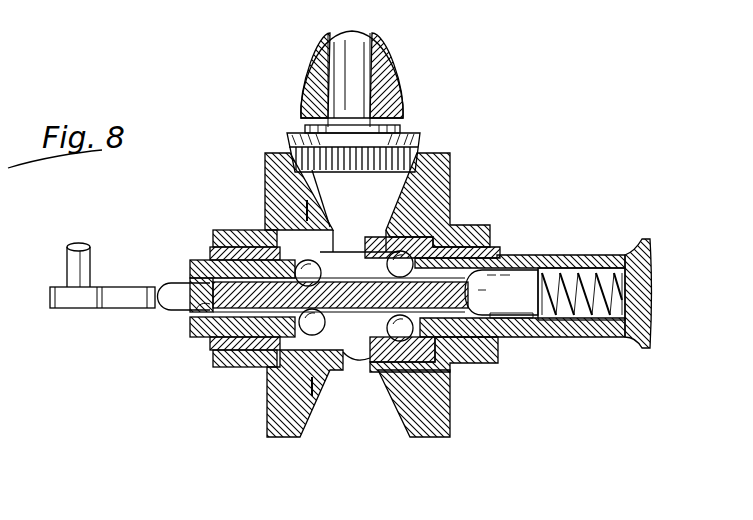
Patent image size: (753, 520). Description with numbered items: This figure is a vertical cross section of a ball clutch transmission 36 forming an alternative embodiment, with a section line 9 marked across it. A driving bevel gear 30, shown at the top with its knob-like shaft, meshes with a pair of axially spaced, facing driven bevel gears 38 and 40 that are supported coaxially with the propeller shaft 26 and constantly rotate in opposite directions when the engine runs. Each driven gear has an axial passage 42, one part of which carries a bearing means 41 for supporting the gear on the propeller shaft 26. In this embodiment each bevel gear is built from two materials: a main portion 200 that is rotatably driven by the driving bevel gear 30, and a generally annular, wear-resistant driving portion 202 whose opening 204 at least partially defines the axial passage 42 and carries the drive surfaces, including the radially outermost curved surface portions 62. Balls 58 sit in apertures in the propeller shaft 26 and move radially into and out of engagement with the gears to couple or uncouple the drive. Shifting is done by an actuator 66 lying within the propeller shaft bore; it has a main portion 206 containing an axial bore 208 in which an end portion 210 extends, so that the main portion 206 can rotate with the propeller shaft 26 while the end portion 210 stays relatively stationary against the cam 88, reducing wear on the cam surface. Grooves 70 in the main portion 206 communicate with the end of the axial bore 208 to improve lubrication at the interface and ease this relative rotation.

The section line 9- 9 is at (302, 210).
The propeller shaft 26 is at (587, 256).
The driving bevel gear 30 is at (410, 135).
The transmission 36 is at (342, 432).
The forward driven bevel gear 38 is at (275, 412).
The rearward driven bevel gear 40 is at (418, 410).
The bearing means 41 is at (500, 246).
The axial passage 42 is at (212, 240).
The balls 58 is at (398, 249).
The radially outermost curved surface portions 62 is at (370, 363).
The actuator 66 is at (528, 300).
The grooves 70 is at (218, 358).
The cam 88 is at (122, 292).
The main portion 200 is at (270, 165).
The driving portion 202 is at (353, 224).
The opening 204 is at (457, 367).
The main portion 206 is at (513, 278).
The axial bore 208 is at (183, 313).
The end portion 210 is at (178, 292).